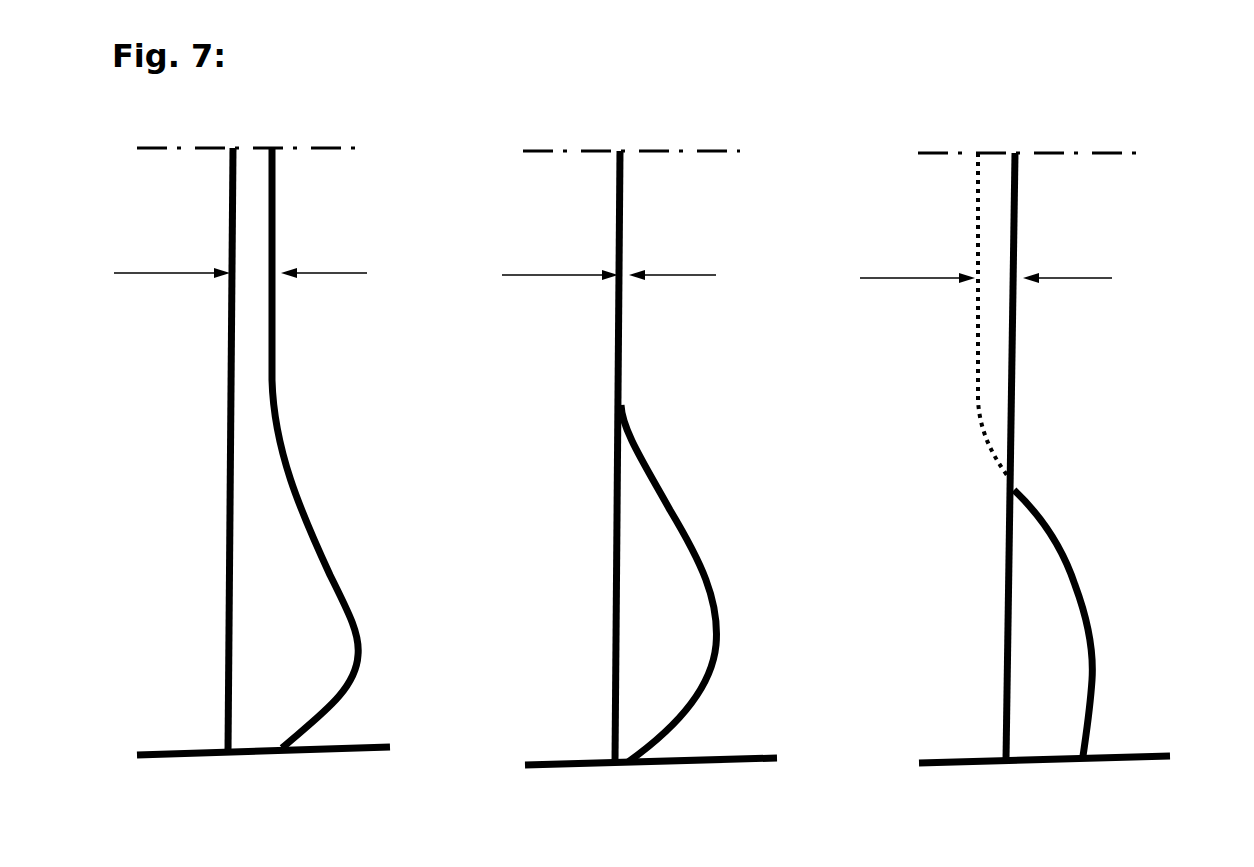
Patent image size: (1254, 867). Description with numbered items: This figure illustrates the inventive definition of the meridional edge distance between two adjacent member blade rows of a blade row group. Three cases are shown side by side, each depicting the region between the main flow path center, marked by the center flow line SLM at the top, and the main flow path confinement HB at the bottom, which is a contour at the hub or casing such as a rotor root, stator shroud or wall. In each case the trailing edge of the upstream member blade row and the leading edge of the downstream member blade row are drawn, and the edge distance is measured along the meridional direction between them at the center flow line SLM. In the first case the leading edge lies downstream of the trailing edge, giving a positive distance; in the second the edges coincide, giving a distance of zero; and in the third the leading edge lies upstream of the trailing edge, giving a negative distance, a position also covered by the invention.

The center flow line SLM is at (681, 150).
The main flow path confinement HB is at (653, 780).